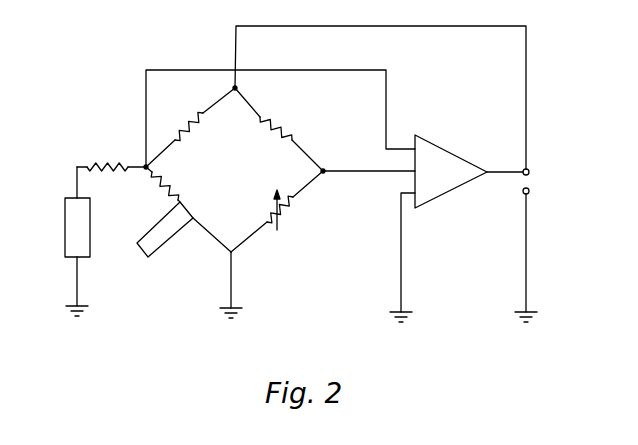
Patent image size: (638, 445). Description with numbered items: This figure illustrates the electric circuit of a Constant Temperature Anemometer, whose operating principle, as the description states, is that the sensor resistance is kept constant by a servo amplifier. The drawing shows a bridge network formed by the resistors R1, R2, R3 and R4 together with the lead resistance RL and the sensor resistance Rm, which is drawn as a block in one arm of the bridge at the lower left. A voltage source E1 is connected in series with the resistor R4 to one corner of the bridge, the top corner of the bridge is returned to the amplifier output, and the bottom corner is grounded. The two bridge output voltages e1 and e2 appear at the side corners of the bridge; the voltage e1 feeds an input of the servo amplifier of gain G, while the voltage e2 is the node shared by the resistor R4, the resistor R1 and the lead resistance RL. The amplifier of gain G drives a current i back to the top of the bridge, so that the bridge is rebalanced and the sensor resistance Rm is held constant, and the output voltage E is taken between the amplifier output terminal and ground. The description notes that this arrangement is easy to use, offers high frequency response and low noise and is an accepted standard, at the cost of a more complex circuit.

The bridge resistor R1 is at (190, 127).
The bridge resistor R2 is at (279, 129).
The adjustable bridge resistor R3 is at (258, 211).
The series resistor R4 is at (111, 157).
The lead resistance RL is at (160, 188).
The measuring resistor (sensor) Rm is at (156, 236).
The voltage source E1 is at (77, 236).
The amplifier with gain G is at (451, 171).
The bridge node voltage e1 is at (330, 162).
The bridge node voltage e2 is at (132, 159).
The output current i is at (503, 155).
The output voltage E is at (547, 180).